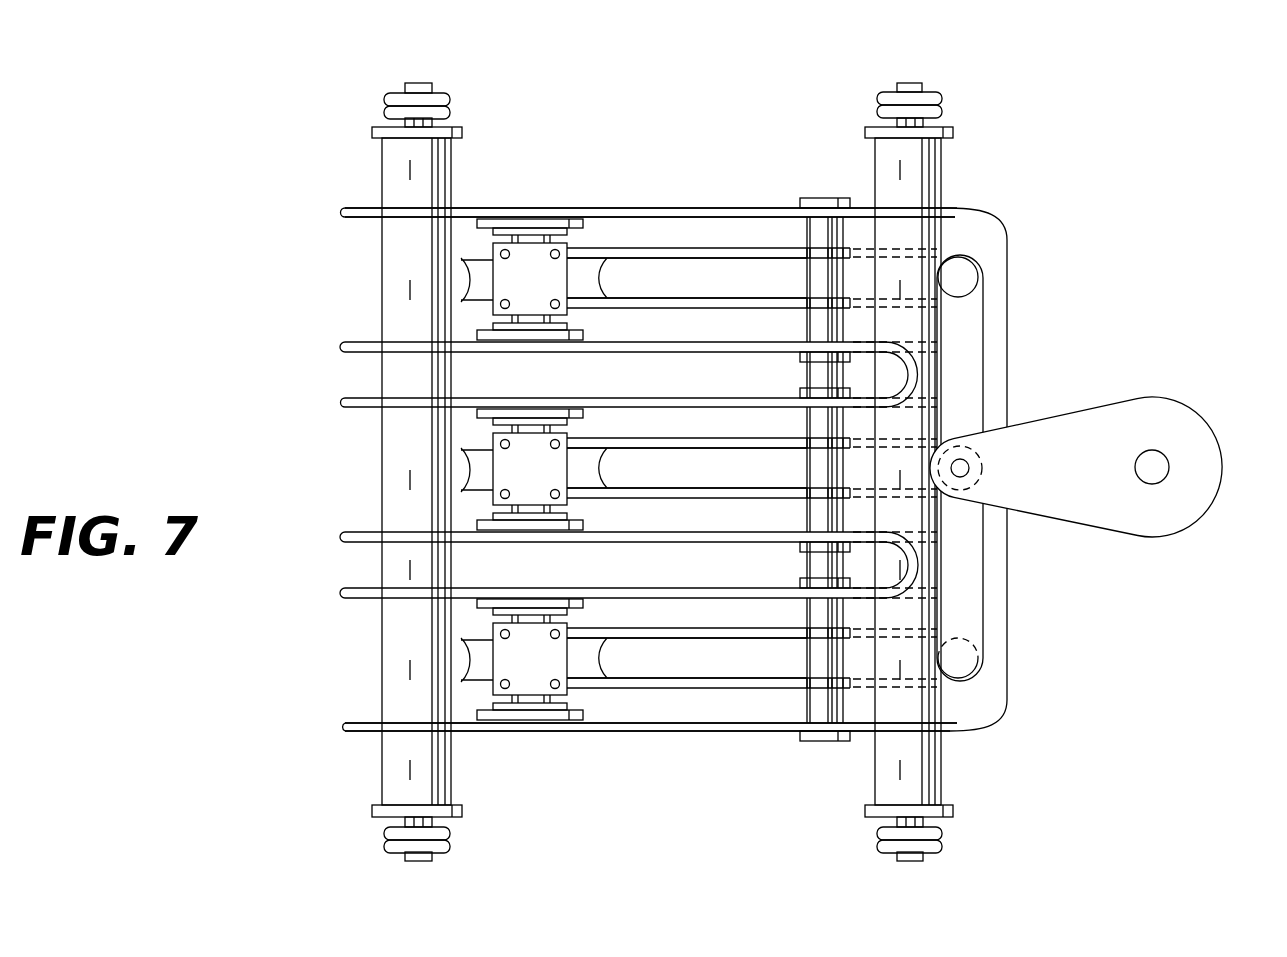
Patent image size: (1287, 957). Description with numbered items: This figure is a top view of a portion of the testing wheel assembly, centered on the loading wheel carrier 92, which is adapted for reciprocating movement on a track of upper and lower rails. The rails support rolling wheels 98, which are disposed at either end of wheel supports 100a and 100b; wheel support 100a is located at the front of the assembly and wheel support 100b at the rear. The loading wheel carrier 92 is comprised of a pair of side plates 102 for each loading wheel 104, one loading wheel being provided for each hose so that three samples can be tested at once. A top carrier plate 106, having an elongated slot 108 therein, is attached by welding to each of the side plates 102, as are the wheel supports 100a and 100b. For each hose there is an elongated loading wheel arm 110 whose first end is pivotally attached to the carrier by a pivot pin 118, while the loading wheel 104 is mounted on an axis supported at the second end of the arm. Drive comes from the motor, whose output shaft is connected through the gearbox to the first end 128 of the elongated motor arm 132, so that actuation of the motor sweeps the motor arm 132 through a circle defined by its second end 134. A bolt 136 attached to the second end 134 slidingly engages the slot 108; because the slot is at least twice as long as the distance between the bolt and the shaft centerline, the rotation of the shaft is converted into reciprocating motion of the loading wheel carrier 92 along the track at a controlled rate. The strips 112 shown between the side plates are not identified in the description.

The loading wheel carrier 92 is at (1014, 675).
The rolling wheels 98 is at (450, 102).
The wheel support 100a is at (388, 782).
The wheel support 100b is at (942, 782).
The side plates 102 is at (688, 208).
The loading wheel 104 is at (478, 262).
The top carrier plate 106 is at (997, 300).
The elongated slot 108 is at (960, 640).
The loading wheel arm 110 is at (603, 245).
The belts 112 is at (652, 250).
The pivot pin 118 is at (815, 200).
The first end 128 is at (1203, 500).
The motor arm 132 is at (1100, 504).
The second end 134 is at (960, 437).
The bolt 136 is at (970, 475).